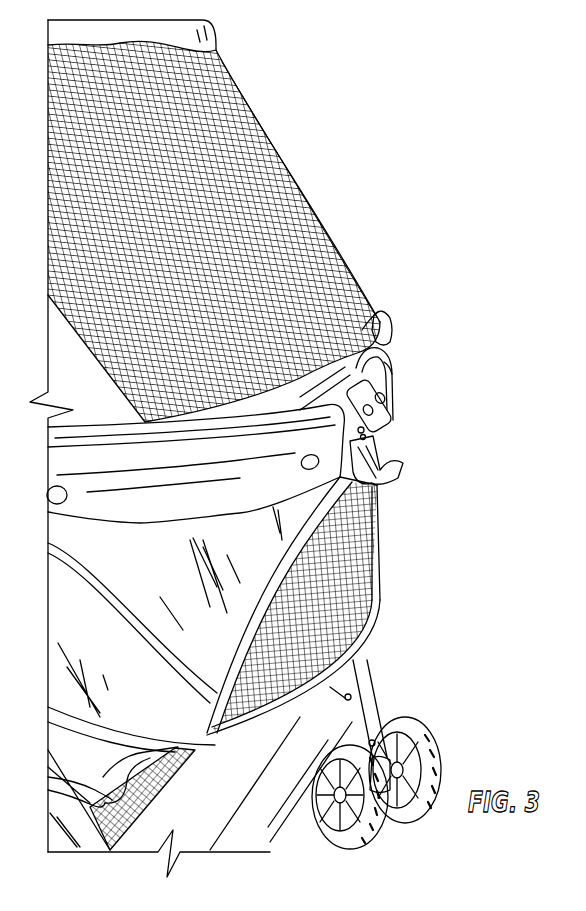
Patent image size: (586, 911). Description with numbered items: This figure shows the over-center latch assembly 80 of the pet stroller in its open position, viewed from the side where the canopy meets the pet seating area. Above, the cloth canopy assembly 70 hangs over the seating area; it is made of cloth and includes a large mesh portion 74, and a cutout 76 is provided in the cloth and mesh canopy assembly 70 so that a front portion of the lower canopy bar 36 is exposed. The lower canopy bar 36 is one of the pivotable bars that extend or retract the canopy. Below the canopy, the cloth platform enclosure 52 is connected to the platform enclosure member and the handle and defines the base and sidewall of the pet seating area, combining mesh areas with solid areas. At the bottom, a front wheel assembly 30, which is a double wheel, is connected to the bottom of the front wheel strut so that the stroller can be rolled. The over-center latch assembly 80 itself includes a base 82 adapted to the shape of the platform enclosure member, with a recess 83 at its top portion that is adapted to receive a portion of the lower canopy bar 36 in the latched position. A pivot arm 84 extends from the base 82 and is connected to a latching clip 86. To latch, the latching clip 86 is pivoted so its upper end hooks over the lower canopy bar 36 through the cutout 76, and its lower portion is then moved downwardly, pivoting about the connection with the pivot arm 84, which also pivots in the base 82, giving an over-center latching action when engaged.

The cloth canopy assembly 70 is at (222, 44).
The mesh portion 74 is at (215, 100).
The lower canopy bar 36 is at (385, 354).
The cutout 76 is at (382, 346).
The pivot arm 84 is at (370, 335).
The over-center latch assembly 80 is at (400, 411).
The base 82 is at (386, 386).
The recess 83 is at (386, 367).
The latching clip 86 is at (378, 458).
The cloth platform enclosure 52 is at (385, 515).
The front wheel assemblies 30 is at (412, 736).